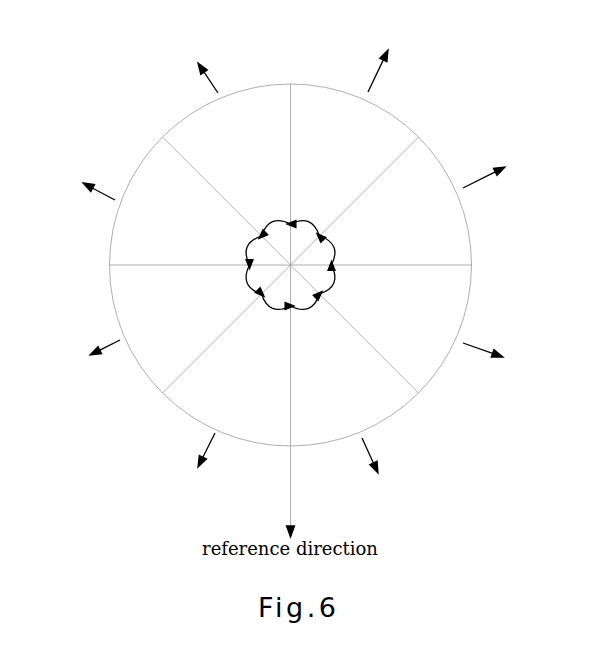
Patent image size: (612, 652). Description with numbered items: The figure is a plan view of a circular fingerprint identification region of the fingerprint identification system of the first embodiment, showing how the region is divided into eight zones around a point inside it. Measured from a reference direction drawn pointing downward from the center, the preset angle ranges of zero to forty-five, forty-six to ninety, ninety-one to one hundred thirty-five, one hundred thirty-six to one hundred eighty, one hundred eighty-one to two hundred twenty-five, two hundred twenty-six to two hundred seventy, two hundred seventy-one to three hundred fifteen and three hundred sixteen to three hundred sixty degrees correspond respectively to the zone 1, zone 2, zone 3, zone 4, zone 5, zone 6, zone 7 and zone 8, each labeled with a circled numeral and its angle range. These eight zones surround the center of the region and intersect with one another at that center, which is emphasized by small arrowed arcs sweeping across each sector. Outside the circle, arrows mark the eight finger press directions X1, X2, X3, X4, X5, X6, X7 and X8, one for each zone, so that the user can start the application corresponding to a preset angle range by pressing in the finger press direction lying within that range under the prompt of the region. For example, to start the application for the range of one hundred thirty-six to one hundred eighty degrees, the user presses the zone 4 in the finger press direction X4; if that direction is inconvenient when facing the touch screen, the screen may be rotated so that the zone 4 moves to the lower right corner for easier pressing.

The zone 1 is at (341, 348).
The zone 2 is at (390, 304).
The zone 3 is at (386, 216).
The zone 4 is at (339, 163).
The zone 5 is at (245, 168).
The zone 6 is at (197, 214).
The zone 7 is at (192, 312).
The zone 8 is at (238, 364).
The finger press direction X1 is at (380, 470).
The finger press direction X2 is at (499, 358).
The finger press direction X3 is at (499, 171).
The finger press direction X4 is at (386, 59).
The finger press direction X5 is at (196, 67).
The finger press direction X6 is at (84, 185).
The finger press direction X7 is at (89, 362).
The finger press direction X8 is at (201, 465).